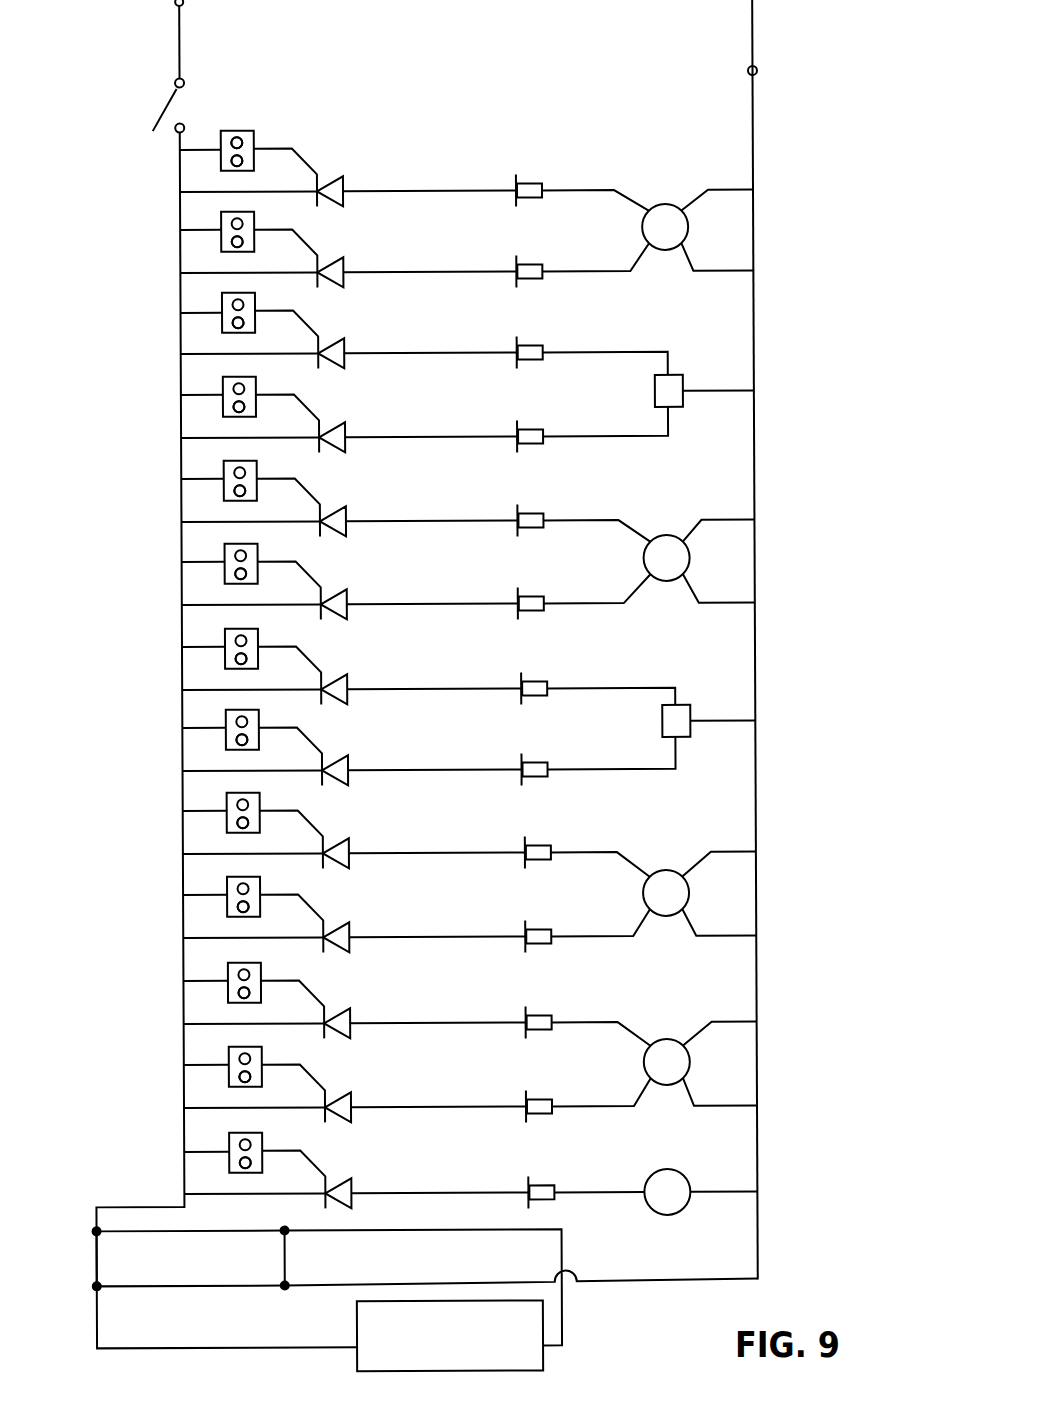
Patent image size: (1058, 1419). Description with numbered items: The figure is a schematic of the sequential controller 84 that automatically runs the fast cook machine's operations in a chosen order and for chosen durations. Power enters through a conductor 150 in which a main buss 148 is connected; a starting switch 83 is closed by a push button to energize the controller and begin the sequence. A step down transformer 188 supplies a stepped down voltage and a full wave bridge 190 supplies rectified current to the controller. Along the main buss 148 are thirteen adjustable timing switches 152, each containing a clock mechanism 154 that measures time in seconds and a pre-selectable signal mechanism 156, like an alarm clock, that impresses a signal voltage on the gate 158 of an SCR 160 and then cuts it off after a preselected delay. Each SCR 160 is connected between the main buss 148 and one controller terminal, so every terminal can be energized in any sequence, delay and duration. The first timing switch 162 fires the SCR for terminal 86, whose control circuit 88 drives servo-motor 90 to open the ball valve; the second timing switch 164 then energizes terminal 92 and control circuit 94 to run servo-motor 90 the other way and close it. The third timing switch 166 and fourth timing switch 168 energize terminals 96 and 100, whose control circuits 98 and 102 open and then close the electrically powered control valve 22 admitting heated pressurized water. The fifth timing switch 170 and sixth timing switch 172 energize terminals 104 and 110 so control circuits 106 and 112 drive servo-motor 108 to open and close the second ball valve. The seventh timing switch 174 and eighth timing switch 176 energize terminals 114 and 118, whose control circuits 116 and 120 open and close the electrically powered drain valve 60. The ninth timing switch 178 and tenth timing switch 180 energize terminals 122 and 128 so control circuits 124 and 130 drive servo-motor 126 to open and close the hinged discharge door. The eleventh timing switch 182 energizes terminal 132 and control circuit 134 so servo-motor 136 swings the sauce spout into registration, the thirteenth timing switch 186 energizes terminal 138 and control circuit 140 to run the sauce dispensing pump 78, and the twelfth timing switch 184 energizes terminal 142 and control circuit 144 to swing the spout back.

The electrically powered control valve 22 is at (679, 377).
The electrically powered drain valve 60 is at (683, 716).
The sauce dispensing pump 78 is at (677, 1178).
The switch 83 is at (166, 110).
The sequential controller 84 is at (168, 328).
The terminal 86 is at (530, 185).
The control circuit 88 is at (566, 191).
The servo-motor 90 is at (666, 206).
The terminal 92 is at (530, 266).
The control circuit 94 is at (562, 272).
The terminal 96 is at (530, 347).
The control circuit 98 is at (580, 353).
The terminal 100 is at (530, 431).
The control circuit 102 is at (578, 437).
The terminal 104 is at (530, 515).
The control circuit 106 is at (575, 521).
The servo-motor 108 is at (663, 537).
The terminal 110 is at (530, 598).
The control circuit 112 is at (565, 604).
The terminal 114 is at (533, 683).
The control circuit 116 is at (587, 689).
The terminal 118 is at (533, 764).
The control circuit 120 is at (570, 770).
The terminal 122 is at (536, 847).
The control circuit 124 is at (560, 853).
The servo-motor 126 is at (665, 872).
The terminal 128 is at (536, 931).
The control circuit 130 is at (563, 937).
The terminal 132 is at (536, 1017).
The control circuit 134 is at (558, 1023).
The servo-motor 136 is at (663, 1041).
The terminal 138 is at (538, 1187).
The control circuit 140 is at (592, 1196).
The terminal 142 is at (536, 1101).
The control circuit 144 is at (565, 1107).
The main buss 148 is at (178, 547).
The conductor 150 is at (177, 32).
The adjustable timing switch 152 is at (264, 631).
The clock mechanism 154 is at (262, 120).
The pre-selectable signal mechanism 156 is at (273, 655).
The gate 158 is at (321, 670).
The SCR 160 is at (369, 679).
The first timing switch 162 is at (221, 153).
The second timing switch 164 is at (221, 242).
The third timing switch 166 is at (221, 326).
The fourth timing switch 168 is at (222, 407).
The fifth timing switch 170 is at (222, 491).
The sixth timing switch 172 is at (223, 574).
The seventh timing switch 174 is at (223, 659).
The eighth timing switch 176 is at (223, 740).
The ninth timing switch 178 is at (224, 823).
The tenth timing switch 180 is at (224, 907).
The eleventh timing switch 182 is at (224, 993).
The twelfth timing switch 184 is at (225, 1077).
The thirteenth timing switch 186 is at (225, 1143).
The step down transformer 188 is at (446, 1302).
The full wave bridge 190 is at (92, 1258).